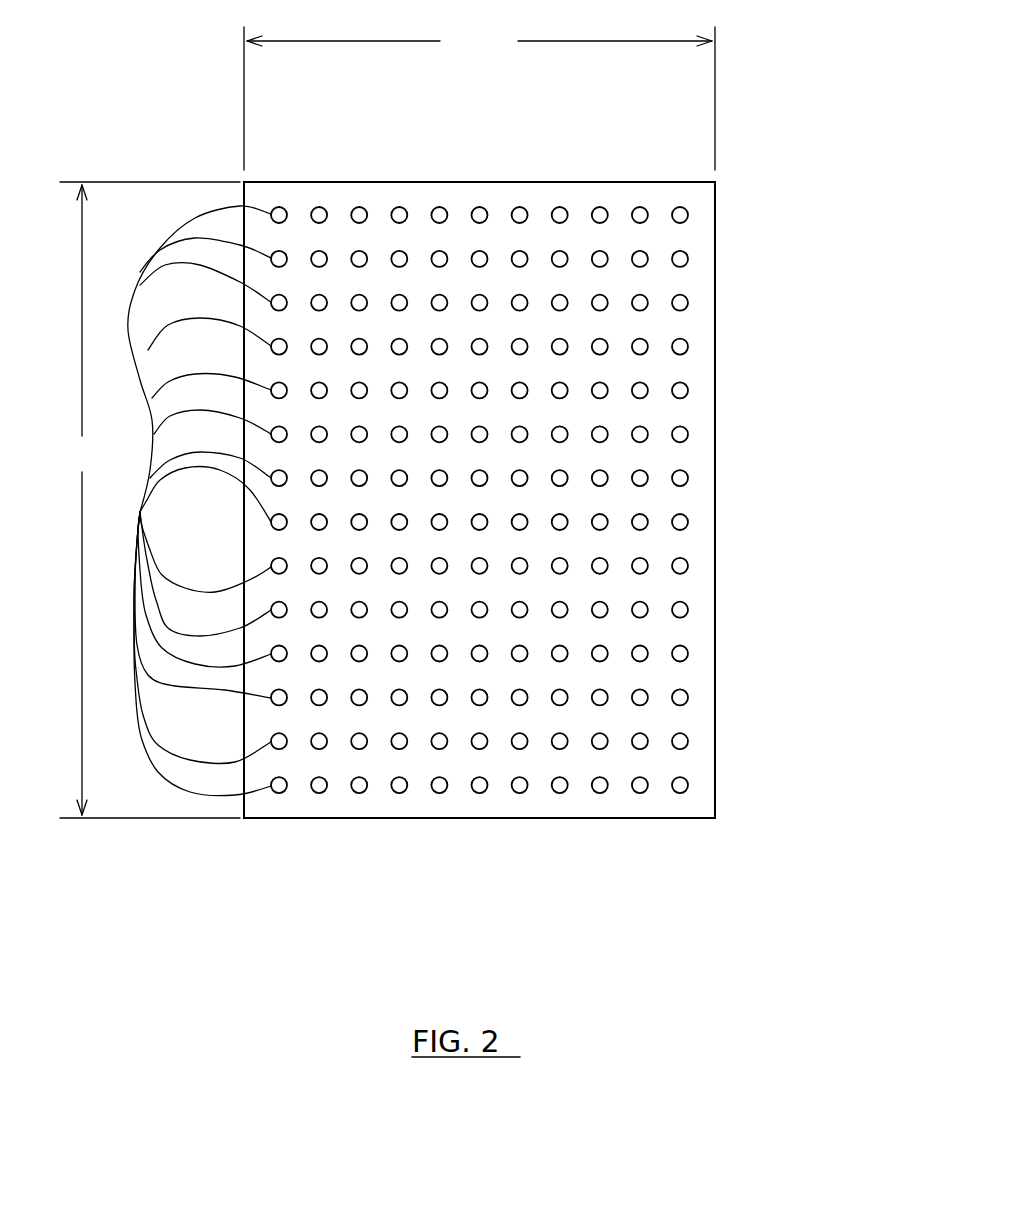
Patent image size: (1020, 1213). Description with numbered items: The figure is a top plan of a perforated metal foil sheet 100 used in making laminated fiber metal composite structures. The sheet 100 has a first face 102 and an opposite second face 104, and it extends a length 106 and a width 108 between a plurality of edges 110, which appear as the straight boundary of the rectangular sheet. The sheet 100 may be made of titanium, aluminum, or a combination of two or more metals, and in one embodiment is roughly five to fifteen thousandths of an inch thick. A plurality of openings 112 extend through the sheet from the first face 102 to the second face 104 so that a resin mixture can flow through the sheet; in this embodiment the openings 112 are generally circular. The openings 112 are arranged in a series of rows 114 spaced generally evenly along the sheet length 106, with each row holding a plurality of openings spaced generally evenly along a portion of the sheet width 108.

The metal foil sheet 100 is at (731, 308).
The first face 102 is at (658, 786).
The second face 104 is at (713, 705).
The length 106 is at (150, 500).
The width 108 is at (479, 98).
The edges 110 is at (577, 182).
The openings 112 is at (643, 208).
The rows 114 is at (184, 501).